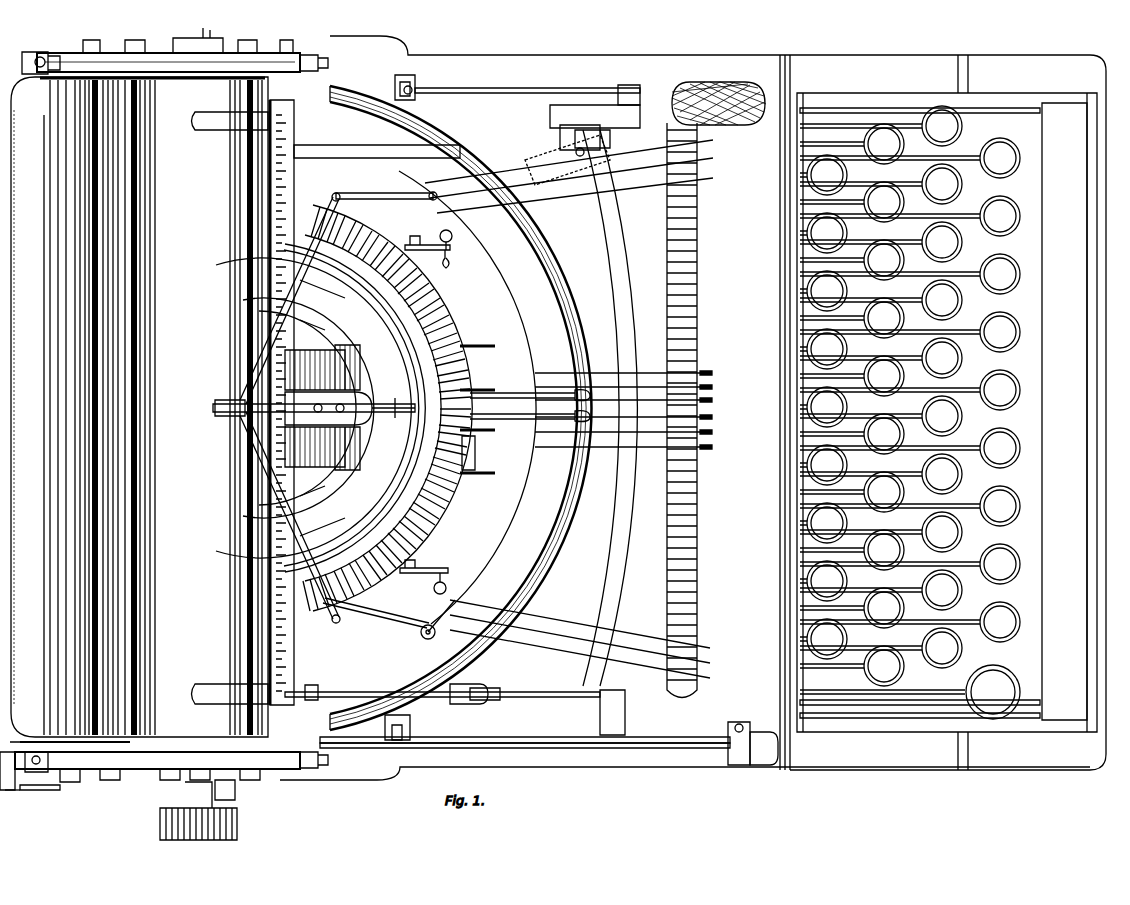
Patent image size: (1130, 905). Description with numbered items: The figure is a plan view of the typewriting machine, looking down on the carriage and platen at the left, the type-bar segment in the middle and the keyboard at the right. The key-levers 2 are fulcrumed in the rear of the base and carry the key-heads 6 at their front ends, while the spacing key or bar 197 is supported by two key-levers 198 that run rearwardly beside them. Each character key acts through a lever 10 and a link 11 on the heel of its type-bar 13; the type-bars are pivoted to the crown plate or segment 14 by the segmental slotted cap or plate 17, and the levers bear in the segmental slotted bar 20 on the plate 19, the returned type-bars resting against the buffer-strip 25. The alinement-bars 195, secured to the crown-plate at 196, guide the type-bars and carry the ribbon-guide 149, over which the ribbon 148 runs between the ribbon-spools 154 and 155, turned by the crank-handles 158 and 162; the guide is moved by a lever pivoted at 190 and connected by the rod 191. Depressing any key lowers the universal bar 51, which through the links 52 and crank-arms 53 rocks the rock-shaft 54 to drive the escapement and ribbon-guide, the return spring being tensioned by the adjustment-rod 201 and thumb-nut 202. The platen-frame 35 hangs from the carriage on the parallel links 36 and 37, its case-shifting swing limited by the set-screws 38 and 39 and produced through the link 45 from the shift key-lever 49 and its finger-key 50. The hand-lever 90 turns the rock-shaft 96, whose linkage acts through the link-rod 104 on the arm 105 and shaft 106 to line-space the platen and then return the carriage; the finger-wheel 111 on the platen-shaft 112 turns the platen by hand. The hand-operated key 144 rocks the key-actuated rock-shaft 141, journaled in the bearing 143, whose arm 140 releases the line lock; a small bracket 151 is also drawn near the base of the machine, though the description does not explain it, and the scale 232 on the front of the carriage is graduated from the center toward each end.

The key-levers 2 is at (920, 385).
The key-heads 6 is at (1002, 318).
The lever 10 is at (725, 425).
The link 11 is at (393, 196).
The type-bar 13 is at (305, 262).
The crown plate or segment 14 is at (392, 400).
The segmental slotted cap or plate 17 is at (445, 305).
The plate 19 is at (630, 125).
The segmental slotted bar 20 is at (569, 160).
The buffer-strip 25 is at (447, 132).
The platen-frame 35 is at (155, 53).
The parallel link 36 is at (262, 42).
The parallel link 37 is at (112, 40).
The set-screw 38 is at (42, 52).
The set-screw 39 is at (328, 63).
The link 45 is at (372, 686).
The shift key-lever 49 is at (920, 705).
The finger-key 50 is at (993, 692).
The universal bar 51 is at (398, 82).
The links 52 is at (412, 88).
The crank-arms 53 is at (497, 85).
The rock-shaft 54 is at (625, 710).
The hand-lever 90 is at (742, 126).
The rock-shaft 96 is at (366, 158).
The link-rod 104 is at (35, 745).
The arm 105 is at (8, 792).
The shaft 106 is at (48, 790).
The finger-wheel 111 is at (237, 825).
The platen-shaft 112 is at (231, 790).
The arm 140 is at (348, 450).
The key-actuated rock-shaft 141 is at (525, 753).
The bearing 143 is at (728, 755).
The hand-operated key 144 is at (760, 765).
The ribbon 148 is at (322, 367).
The ribbon-guide 149 is at (314, 408).
The bracket 151 is at (410, 720).
The ribbon-spool 154 is at (480, 389).
The ribbon-spool 155 is at (484, 468).
The crank-handle 158 is at (440, 252).
The crank-handle 162 is at (440, 568).
The pivot 190 is at (838, 713).
The rod 191 is at (395, 412).
The alinement-bars 195 is at (283, 336).
The securement point 196 is at (300, 303).
The spacing key or bar 197 is at (1064, 411).
The key-levers 198 is at (1002, 108).
The adjustment-rod 201 is at (420, 632).
The thumb-nut 202 is at (423, 640).
The scale 232 is at (268, 640).